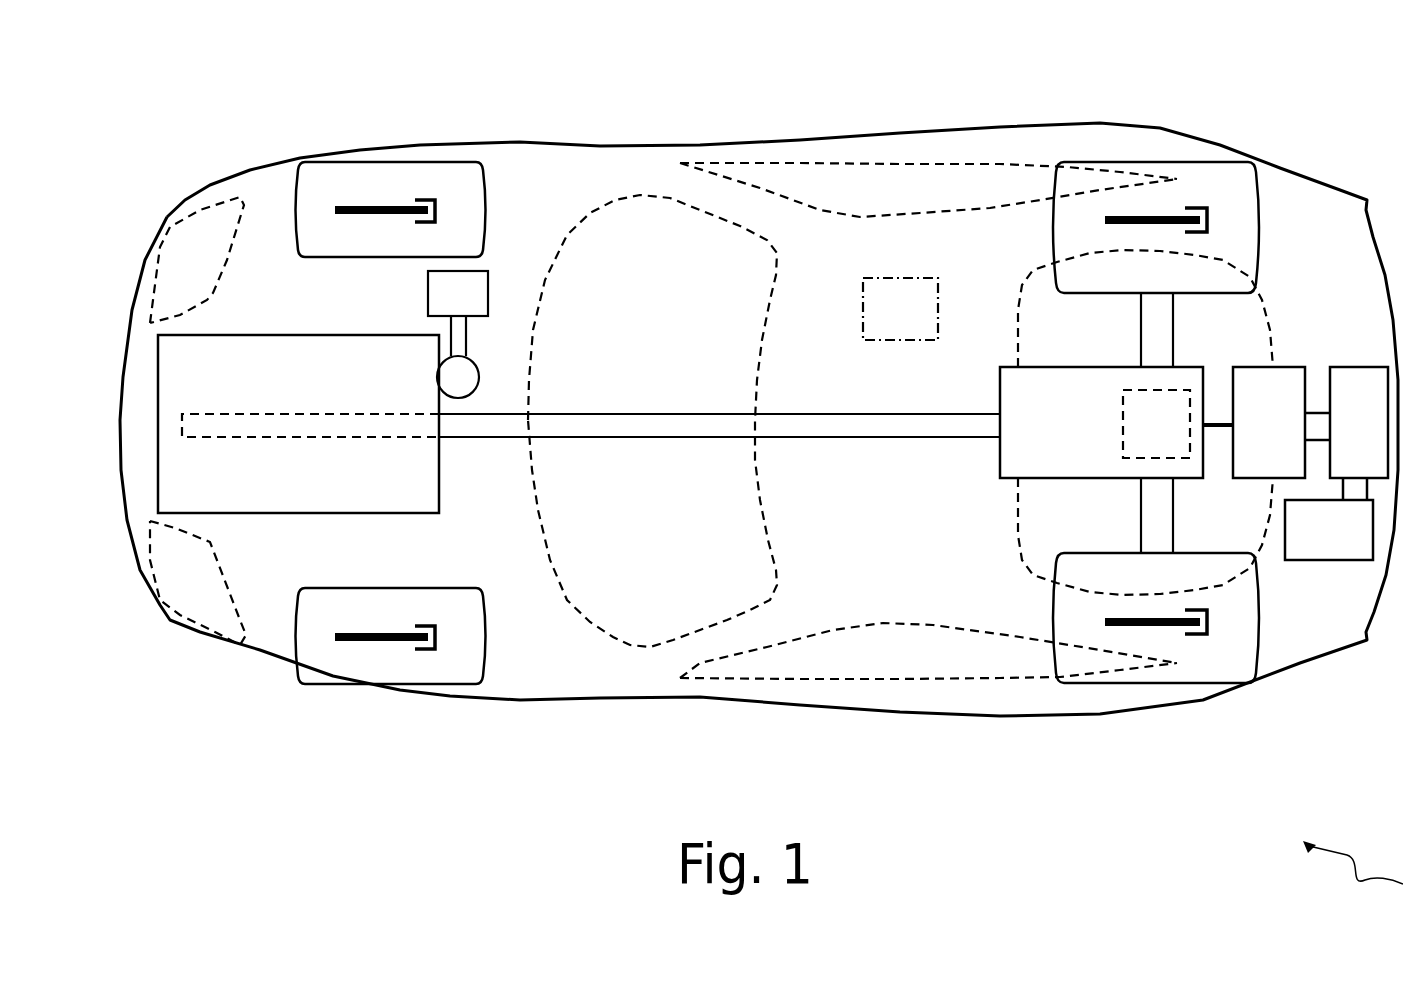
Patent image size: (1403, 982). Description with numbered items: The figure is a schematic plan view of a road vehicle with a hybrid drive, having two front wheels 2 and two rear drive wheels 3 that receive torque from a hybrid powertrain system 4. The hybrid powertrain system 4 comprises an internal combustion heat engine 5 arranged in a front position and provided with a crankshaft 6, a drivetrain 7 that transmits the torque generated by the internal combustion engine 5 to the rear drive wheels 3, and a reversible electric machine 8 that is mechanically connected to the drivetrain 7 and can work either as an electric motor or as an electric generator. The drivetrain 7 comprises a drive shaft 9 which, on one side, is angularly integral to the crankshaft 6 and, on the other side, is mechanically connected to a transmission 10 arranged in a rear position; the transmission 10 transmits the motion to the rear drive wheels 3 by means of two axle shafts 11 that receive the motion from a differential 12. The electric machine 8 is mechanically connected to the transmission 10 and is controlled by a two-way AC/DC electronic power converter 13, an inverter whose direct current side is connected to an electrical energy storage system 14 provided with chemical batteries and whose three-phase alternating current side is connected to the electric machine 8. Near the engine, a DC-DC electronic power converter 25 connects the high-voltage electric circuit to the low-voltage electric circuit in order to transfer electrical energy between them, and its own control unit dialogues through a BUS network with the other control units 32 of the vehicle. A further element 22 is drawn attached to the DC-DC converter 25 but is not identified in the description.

The front wheels 2 is at (452, 183).
The rear drive wheels 3 is at (1240, 178).
The hybrid powertrain system 4 is at (205, 165).
The internal combustion heat engine 5 is at (167, 363).
The crankshaft 6 is at (285, 422).
The drivetrain 7 is at (793, 108).
The electric machine 8 is at (1281, 422).
The drive shaft 9 is at (812, 425).
The transmission 10 is at (1116, 422).
The axle shafts 11 is at (1153, 319).
The differential 12 is at (1156, 424).
The AC/DC electronic power converter 13 is at (1359, 433).
The electrical energy storage system 14 is at (1329, 530).
The charging connector 22 is at (458, 377).
The DC-DC electronic power converter 25 is at (458, 313).
The control units 32 is at (900, 309).